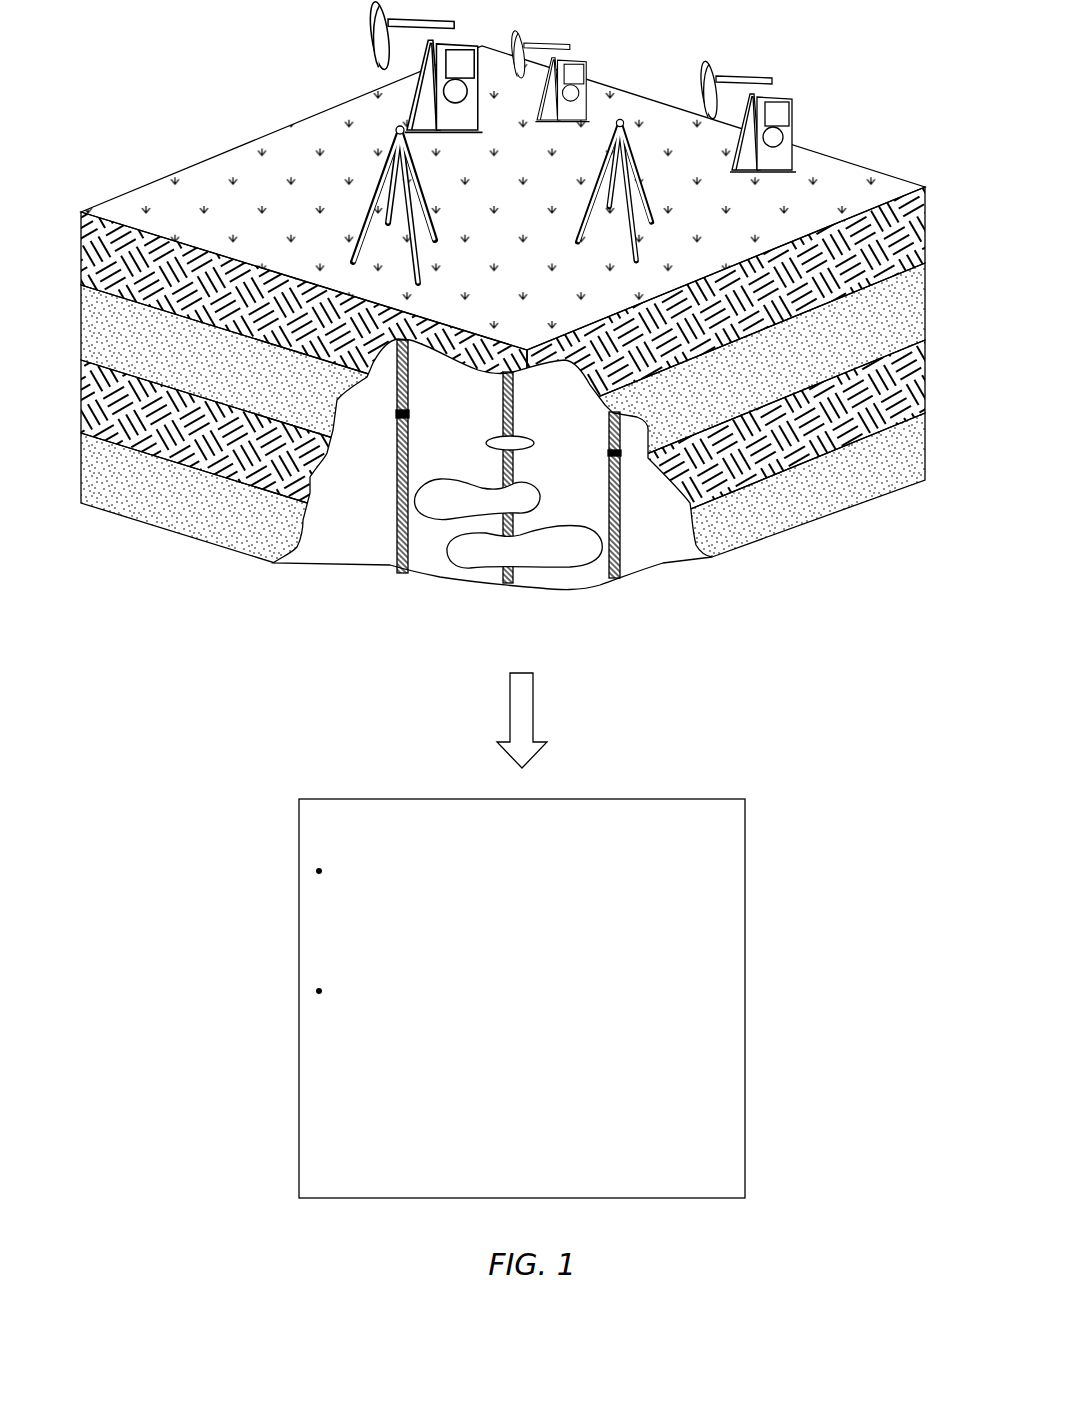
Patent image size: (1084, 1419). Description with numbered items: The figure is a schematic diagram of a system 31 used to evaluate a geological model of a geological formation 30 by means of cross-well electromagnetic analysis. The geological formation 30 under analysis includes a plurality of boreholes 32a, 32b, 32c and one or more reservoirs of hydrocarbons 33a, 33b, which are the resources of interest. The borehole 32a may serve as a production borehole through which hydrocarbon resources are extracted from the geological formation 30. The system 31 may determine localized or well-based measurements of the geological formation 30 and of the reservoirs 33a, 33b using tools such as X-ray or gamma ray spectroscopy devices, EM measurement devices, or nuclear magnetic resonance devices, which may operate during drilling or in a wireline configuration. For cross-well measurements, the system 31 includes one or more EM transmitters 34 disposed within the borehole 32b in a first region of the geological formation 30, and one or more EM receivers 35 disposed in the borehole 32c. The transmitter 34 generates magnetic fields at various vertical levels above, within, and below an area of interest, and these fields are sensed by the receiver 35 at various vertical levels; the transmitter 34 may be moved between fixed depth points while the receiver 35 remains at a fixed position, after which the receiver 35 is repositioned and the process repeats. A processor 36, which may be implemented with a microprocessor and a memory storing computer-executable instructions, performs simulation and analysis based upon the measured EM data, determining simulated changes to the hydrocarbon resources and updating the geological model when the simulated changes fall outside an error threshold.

The geological formation 30 is at (577, 505).
The system 31 is at (503, 330).
The borehole 32a is at (502, 423).
The borehole 32b is at (397, 538).
The borehole 32c is at (642, 573).
The reservoir of hydrocarbons 33a is at (477, 499).
The reservoir of hydrocarbons 33b is at (524, 546).
The EM transmitter 34 is at (408, 416).
The EM receiver 35 is at (610, 453).
The processor 36 is at (745, 848).